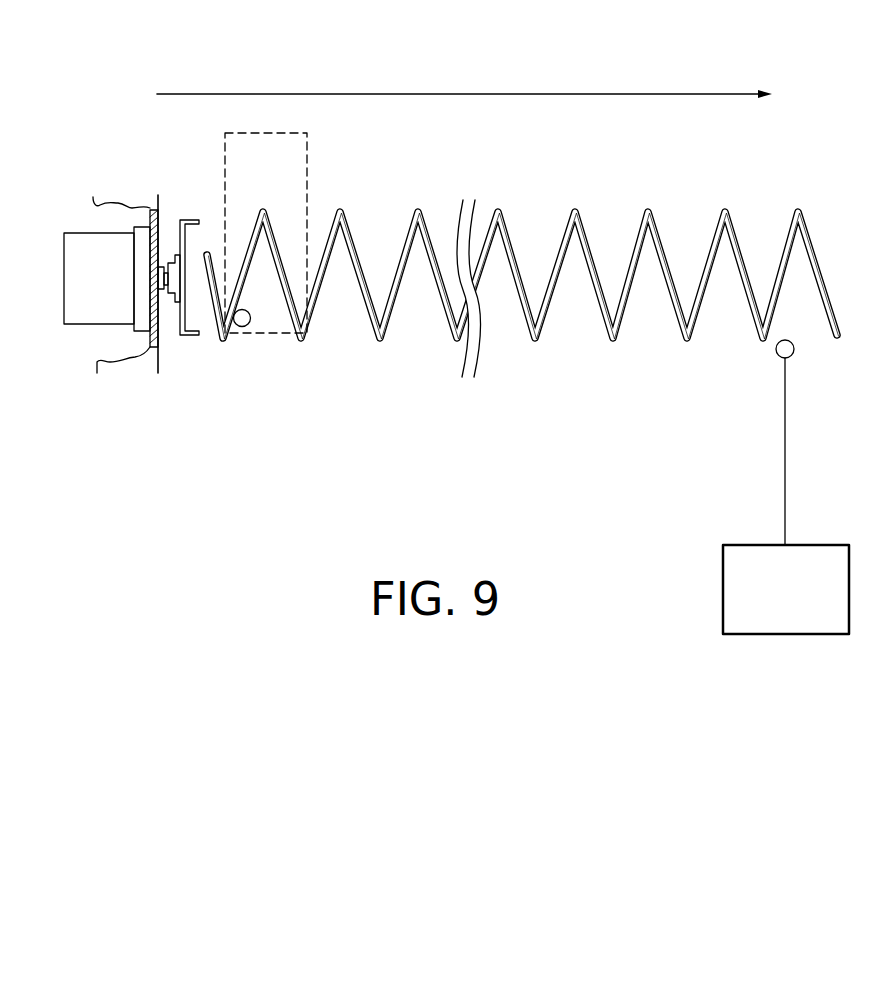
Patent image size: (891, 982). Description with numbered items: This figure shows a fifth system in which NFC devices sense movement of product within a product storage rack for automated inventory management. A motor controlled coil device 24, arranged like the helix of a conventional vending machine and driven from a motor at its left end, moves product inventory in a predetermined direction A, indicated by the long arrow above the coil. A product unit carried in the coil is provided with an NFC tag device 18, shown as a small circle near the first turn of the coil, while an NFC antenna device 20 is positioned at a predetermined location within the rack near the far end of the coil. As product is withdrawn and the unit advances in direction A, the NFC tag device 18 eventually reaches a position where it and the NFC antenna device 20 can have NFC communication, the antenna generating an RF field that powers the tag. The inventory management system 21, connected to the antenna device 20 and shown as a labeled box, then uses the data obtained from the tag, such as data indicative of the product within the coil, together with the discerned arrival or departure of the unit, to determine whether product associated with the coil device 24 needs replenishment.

The predetermined direction A is at (462, 94).
The motor controlled coil device 24 is at (186, 192).
The NFC tag device 18 is at (250, 322).
The NFC antenna device 20 is at (776, 350).
The inventory management system 21 is at (723, 588).